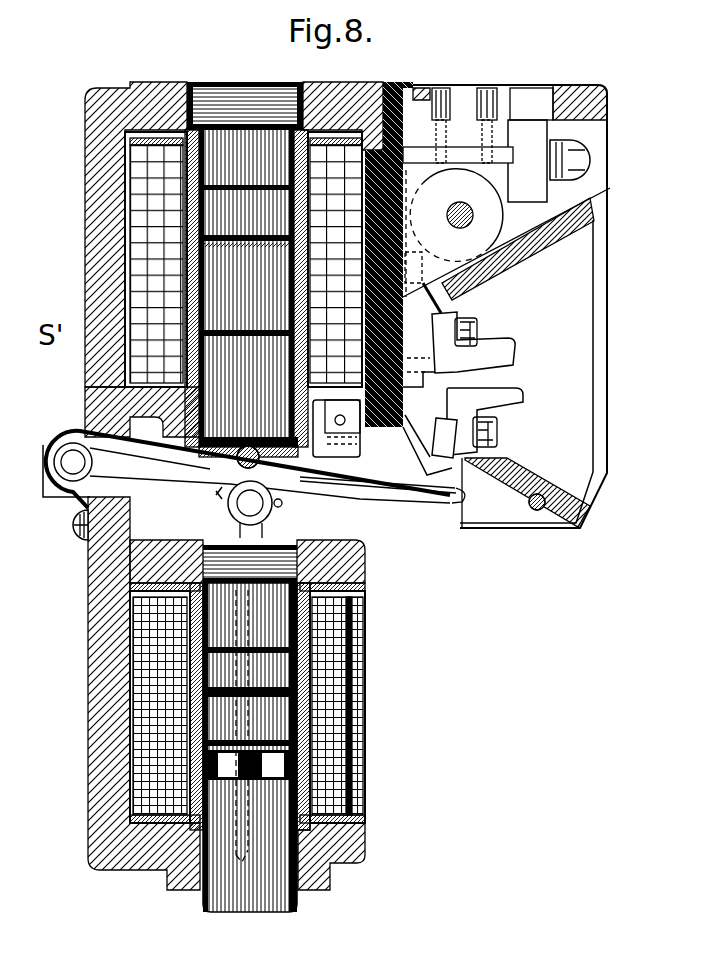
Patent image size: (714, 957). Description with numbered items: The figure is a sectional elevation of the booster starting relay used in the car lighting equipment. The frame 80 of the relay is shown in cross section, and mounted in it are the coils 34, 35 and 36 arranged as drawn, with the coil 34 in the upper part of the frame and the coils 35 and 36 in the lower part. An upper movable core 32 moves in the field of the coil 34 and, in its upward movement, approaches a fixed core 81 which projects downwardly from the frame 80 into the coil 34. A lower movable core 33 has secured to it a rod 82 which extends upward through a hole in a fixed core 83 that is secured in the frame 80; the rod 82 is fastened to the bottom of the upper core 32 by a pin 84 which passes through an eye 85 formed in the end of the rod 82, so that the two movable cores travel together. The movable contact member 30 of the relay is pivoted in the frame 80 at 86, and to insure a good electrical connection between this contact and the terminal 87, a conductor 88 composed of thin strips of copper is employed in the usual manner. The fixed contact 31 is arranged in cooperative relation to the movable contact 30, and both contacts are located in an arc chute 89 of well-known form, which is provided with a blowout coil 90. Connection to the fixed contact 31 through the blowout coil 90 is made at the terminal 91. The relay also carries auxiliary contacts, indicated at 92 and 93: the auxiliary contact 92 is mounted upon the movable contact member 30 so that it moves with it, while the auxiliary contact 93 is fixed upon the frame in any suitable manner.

The frame 80 is at (95, 240).
The coil 34 is at (130, 277).
The fixed core 81 is at (246, 275).
The upper movable core 32 is at (95, 393).
The conductor 88 is at (66, 433).
The pivot 86 is at (70, 462).
The terminal 87 is at (78, 542).
The eye 85 is at (230, 492).
The pin 84 is at (256, 505).
The rod 82 is at (252, 533).
The fixed core 83 is at (135, 728).
The coil 36 is at (355, 680).
The coil 35 is at (337, 742).
The lower movable core 33 is at (240, 903).
The auxiliary contact 93 is at (362, 446).
The auxiliary contact 92 is at (352, 482).
The terminal 91 is at (535, 130).
The blowout coil 90 is at (497, 217).
The arc chute 89 is at (582, 368).
The fixed contact 31 is at (497, 350).
The movable contact member 30 is at (460, 490).